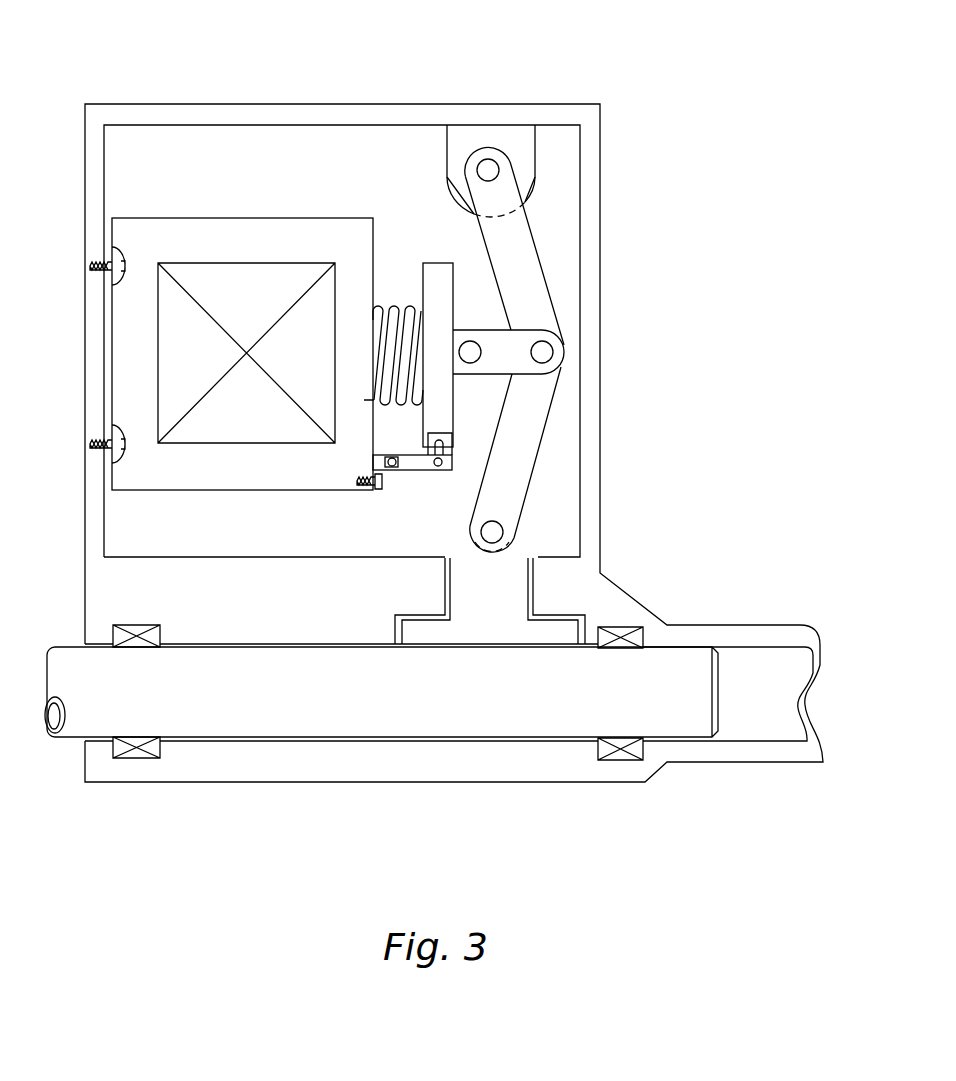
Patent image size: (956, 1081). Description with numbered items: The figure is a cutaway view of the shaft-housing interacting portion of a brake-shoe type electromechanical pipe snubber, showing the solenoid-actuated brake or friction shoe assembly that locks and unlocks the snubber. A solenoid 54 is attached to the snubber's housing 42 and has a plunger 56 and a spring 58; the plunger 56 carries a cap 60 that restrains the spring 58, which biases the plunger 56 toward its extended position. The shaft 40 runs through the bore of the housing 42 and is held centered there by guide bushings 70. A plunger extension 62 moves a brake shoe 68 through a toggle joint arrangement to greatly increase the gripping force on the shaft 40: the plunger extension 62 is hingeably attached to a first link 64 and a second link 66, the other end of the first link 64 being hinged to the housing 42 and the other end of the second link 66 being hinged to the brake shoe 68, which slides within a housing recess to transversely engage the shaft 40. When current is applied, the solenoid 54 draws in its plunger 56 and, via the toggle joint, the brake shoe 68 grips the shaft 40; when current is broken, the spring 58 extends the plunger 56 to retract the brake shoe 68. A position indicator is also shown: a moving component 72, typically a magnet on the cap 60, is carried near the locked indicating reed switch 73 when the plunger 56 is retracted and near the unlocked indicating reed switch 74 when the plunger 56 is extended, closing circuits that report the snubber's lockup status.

The shaft 40 is at (262, 720).
The housing 42 is at (590, 160).
The solenoid 54 is at (193, 236).
The plunger 56 is at (407, 307).
The spring 58 is at (383, 303).
The cap 60 is at (433, 275).
The plunger extension 62 is at (497, 345).
The first link 64 is at (517, 247).
The second link 66 is at (530, 403).
The brake shoe 68 is at (493, 628).
The guide bushings 70 is at (620, 757).
The moving component 72 is at (450, 440).
The snubber locked indicating reed switch 73 is at (397, 462).
The snubber unlocked indicating reed switch 74 is at (452, 458).